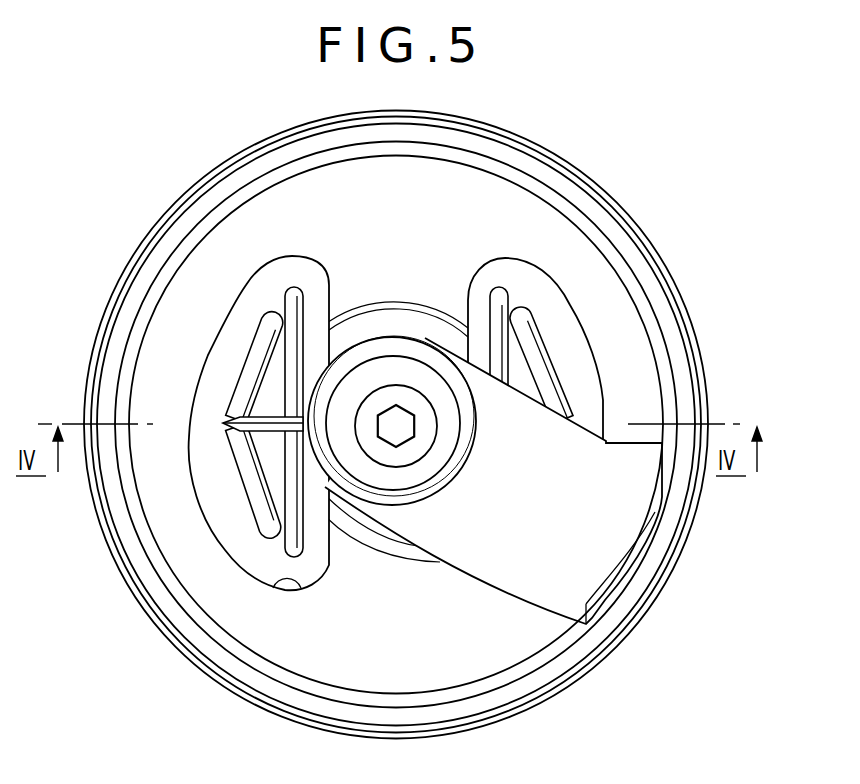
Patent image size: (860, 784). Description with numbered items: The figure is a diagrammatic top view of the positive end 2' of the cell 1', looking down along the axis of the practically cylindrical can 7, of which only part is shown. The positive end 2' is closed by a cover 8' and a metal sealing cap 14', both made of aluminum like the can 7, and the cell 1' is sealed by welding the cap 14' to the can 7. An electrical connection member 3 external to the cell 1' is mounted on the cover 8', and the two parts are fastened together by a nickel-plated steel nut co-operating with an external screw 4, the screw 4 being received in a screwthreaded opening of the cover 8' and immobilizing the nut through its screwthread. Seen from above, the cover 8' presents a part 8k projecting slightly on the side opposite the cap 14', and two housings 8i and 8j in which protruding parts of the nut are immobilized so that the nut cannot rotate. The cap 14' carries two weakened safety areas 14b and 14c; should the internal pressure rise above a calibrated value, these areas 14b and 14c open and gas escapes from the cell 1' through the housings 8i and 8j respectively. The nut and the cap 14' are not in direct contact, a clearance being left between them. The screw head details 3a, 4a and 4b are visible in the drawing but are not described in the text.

The cell 1' is at (447, 425).
The positive end 2' is at (399, 424).
The electrical connection member 3 is at (634, 580).
The pivot screw 3a is at (400, 434).
The screw 4 is at (424, 405).
The hub flange 4a is at (463, 437).
The hub bore 4b is at (423, 473).
The can 7 is at (703, 323).
The cover 8' is at (431, 363).
The housing 8i is at (303, 593).
The housing 8j is at (560, 302).
The projecting part 8k is at (400, 318).
The metal sealing cap 14' is at (341, 449).
The weakened safety area 14b is at (250, 370).
The weakened safety area 14c is at (538, 355).